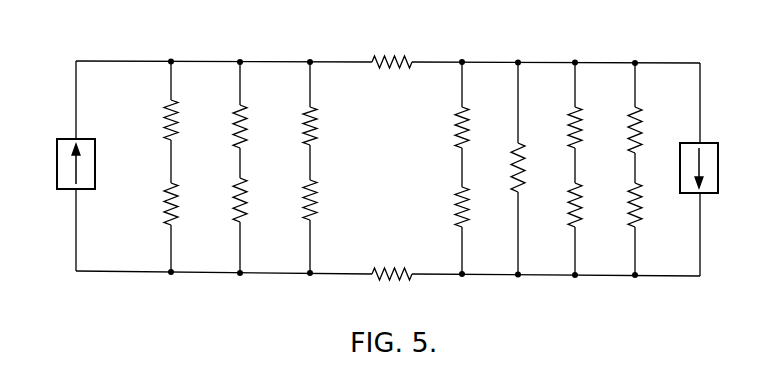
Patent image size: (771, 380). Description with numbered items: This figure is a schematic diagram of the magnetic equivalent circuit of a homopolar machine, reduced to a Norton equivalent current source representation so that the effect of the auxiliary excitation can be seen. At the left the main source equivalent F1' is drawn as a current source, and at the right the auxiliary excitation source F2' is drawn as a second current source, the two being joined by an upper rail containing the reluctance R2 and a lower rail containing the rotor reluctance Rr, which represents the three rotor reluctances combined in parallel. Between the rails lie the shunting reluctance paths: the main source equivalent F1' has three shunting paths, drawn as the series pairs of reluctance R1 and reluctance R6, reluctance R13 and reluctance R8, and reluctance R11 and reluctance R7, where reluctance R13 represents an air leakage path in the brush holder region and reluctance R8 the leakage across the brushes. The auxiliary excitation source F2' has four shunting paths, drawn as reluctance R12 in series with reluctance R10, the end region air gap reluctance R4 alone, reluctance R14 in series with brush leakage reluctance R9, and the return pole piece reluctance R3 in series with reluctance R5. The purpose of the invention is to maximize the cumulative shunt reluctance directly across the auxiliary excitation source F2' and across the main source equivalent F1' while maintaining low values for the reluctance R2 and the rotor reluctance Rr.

The shunting reluctance R1 is at (176, 128).
The reluctance R2 is at (385, 60).
The return pole piece reluctance R3 is at (628, 126).
The end region air gap reluctance R4 is at (512, 163).
The shunting reluctance R5 is at (628, 212).
The shunting reluctance R6 is at (177, 221).
The shunting reluctance R7 is at (317, 214).
The brush leakage reluctance R8 is at (247, 216).
The brush leakage reluctance R9 is at (568, 212).
The shunting reluctance R10 is at (456, 217).
The shunting reluctance R11 is at (318, 127).
The shunting reluctance R12 is at (455, 125).
The brush holder region air leakage path reluctance R13 is at (248, 127).
The brush holder region air leakage path reluctance R14 is at (569, 125).
The rotor reluctance Rr is at (410, 276).
The main source equivalent F1' is at (54, 164).
The auxiliary excitation source F2' is at (717, 168).